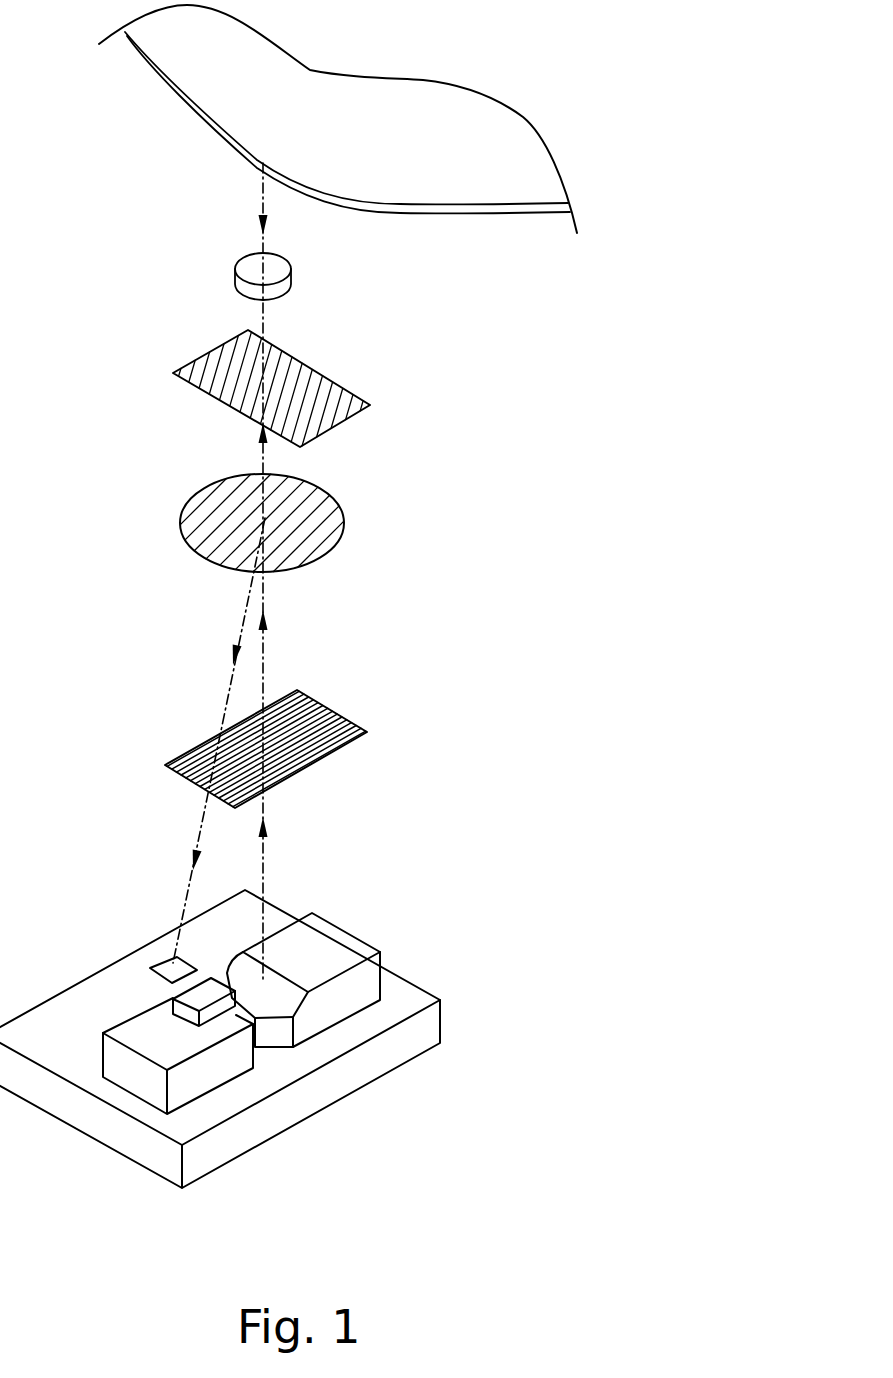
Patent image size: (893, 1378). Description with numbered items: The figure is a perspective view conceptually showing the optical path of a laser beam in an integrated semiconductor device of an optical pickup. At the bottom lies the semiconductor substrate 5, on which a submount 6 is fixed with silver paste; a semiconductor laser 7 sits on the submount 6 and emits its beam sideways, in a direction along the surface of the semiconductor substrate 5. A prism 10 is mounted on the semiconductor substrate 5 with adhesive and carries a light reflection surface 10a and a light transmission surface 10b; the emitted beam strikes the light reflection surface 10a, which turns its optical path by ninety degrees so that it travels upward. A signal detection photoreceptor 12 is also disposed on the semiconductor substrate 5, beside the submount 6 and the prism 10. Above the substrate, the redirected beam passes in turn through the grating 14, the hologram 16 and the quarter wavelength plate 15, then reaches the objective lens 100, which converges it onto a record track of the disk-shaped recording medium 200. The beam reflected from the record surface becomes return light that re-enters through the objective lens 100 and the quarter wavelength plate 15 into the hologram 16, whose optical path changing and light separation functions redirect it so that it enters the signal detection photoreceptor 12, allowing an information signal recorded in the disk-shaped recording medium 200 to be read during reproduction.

The disk-shaped recording medium 200 is at (490, 133).
The objective lens 100 is at (280, 263).
The quarter wavelength plate 15 is at (323, 377).
The hologram 16 is at (317, 515).
The grating 14 is at (315, 713).
The semiconductor substrate 5 is at (407, 1042).
The submount 6 is at (152, 1030).
The semiconductor laser 7 is at (212, 1012).
The signal detection photoreceptor 12 is at (163, 966).
The prism 10 is at (348, 998).
The light reflection surface 10a is at (284, 1000).
The light transmission surface 10b is at (278, 1033).